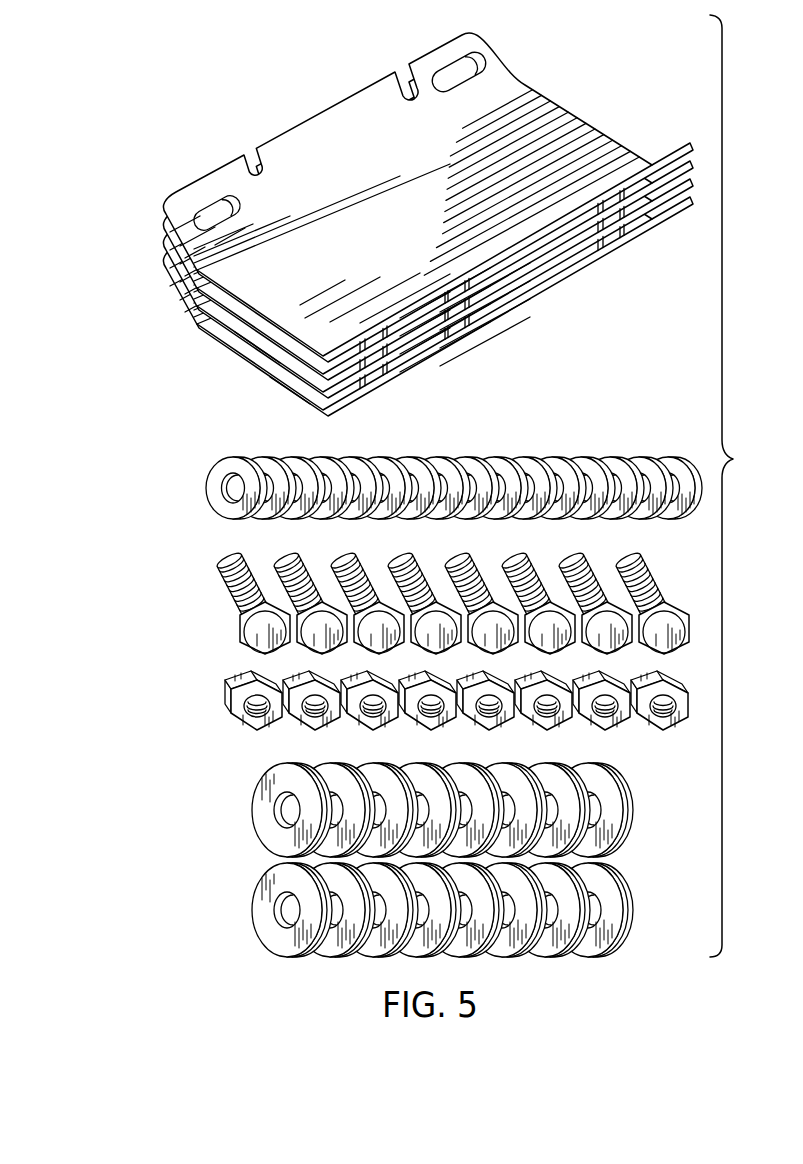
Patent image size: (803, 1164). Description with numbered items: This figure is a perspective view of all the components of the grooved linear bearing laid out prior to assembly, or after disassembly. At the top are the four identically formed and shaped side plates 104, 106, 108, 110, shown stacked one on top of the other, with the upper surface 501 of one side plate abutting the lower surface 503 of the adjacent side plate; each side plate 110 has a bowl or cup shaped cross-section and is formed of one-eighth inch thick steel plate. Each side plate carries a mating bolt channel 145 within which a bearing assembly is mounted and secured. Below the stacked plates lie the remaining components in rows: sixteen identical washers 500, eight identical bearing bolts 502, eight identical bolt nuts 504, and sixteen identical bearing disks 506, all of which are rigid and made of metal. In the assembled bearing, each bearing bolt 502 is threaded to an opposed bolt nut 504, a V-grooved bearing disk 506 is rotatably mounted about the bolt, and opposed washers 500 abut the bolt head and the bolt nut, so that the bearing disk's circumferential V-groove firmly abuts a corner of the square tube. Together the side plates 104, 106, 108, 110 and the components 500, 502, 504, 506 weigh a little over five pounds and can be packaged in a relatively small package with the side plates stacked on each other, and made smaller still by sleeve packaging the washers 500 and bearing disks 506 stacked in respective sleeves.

The side plate 104 is at (162, 269).
The side plate 106 is at (162, 253).
The side plate 108 is at (162, 234).
The side plate 110 is at (162, 216).
The bolt channel 145 is at (452, 70).
The washers 500 is at (200, 518).
The upper surface 501 is at (287, 367).
The bearing bolts 502 is at (217, 615).
The lower surface 503 is at (257, 345).
The bolt nuts 504 is at (220, 715).
The bearing disks 506 is at (237, 863).